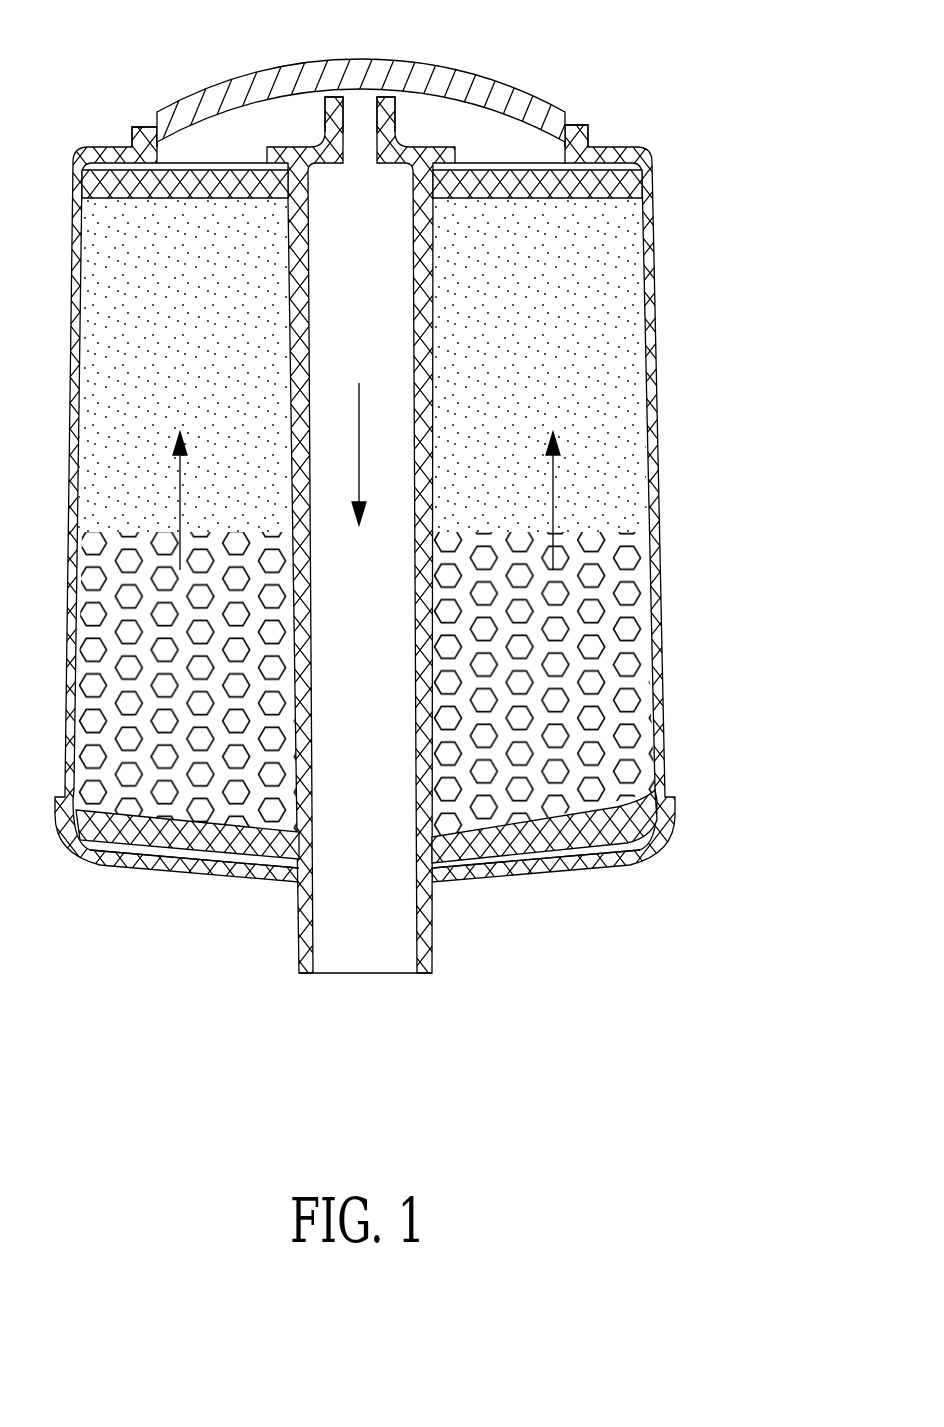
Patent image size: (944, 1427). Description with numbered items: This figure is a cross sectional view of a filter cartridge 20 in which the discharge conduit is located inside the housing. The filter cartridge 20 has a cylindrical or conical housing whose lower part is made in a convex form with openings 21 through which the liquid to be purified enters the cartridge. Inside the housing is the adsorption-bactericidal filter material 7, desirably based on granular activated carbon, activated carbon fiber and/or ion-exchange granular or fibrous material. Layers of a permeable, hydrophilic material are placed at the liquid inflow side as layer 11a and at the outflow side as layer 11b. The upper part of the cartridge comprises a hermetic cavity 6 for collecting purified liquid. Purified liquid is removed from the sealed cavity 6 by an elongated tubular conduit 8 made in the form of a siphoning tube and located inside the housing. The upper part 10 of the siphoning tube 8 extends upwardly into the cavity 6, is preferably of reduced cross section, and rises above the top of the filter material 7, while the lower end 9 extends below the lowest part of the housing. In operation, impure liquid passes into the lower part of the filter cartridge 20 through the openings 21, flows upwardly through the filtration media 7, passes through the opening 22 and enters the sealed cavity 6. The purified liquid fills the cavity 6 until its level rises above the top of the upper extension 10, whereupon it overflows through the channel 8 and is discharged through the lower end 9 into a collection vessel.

The hermetic cavity 6 is at (478, 128).
The adsorption-bactericidal filter material 7 is at (625, 470).
The tubular conduit 8 is at (433, 338).
The lower end of the siphoning tube 9 is at (434, 961).
The upper part of the siphoning tube 10 is at (397, 97).
The permeable hydrophilic material layer at inflow side 11a is at (606, 188).
The permeable hydrophilic material layer at outflow side 11b is at (617, 800).
The filter cartridge 20 is at (692, 378).
The openings 21 is at (153, 867).
The opening 22 is at (188, 153).